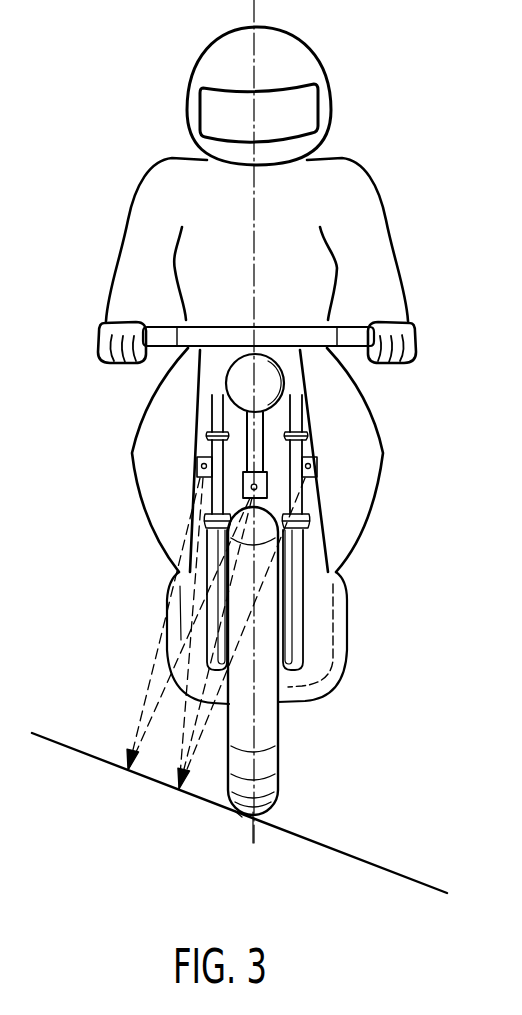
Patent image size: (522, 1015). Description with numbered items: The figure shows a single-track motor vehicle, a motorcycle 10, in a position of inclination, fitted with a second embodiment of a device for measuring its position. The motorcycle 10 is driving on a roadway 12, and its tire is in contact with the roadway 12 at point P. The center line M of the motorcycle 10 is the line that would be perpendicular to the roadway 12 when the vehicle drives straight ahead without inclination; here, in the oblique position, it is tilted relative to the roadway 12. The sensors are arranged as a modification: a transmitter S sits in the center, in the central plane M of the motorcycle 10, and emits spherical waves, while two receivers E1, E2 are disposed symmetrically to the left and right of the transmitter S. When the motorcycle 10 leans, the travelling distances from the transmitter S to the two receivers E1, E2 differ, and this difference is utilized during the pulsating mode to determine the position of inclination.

The receiver E1 is at (197, 457).
The receiver E2 is at (318, 467).
The transmitter S is at (266, 472).
The motorcycle 10 is at (366, 629).
The roadway 12 is at (397, 874).
The point P is at (240, 815).
The center line M is at (254, 826).